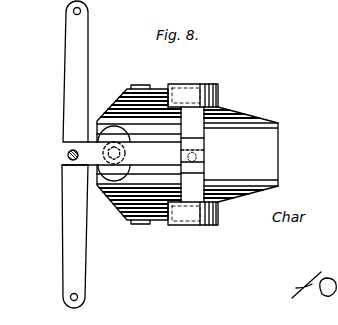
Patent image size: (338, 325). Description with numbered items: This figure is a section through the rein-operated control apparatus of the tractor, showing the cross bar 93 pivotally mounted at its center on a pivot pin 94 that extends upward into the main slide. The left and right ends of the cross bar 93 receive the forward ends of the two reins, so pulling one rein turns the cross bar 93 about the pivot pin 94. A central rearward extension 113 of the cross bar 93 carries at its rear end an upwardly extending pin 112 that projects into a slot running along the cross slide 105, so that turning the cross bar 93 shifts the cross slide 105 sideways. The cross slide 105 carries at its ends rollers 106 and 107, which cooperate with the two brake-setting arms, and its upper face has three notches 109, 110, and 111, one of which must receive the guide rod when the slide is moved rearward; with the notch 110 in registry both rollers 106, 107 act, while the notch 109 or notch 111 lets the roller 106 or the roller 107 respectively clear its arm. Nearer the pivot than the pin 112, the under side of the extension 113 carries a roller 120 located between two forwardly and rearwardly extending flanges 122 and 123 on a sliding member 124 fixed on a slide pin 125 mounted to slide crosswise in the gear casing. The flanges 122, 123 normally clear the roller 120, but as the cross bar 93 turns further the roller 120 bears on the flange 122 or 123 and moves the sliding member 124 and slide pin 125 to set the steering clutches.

The cross bar 93 is at (77, 78).
The pivot pin 94 is at (70, 158).
The cross slide 105 is at (197, 118).
The roller 106 is at (219, 212).
The roller 107 is at (220, 93).
The notch 109 is at (205, 168).
The notch 110 is at (205, 157).
The notch 111 is at (205, 143).
The pin 112 is at (180, 162).
The rearward extension 113 is at (133, 153).
The roller 120 is at (137, 201).
The flange 122 is at (280, 181).
The flange 123 is at (280, 127).
The sliding member 124 is at (267, 122).
The slide pin 125 is at (143, 84).